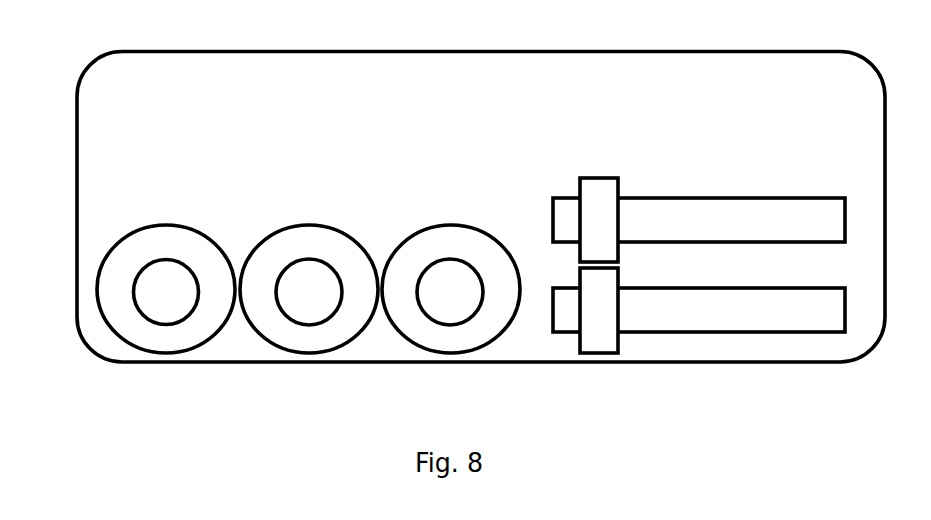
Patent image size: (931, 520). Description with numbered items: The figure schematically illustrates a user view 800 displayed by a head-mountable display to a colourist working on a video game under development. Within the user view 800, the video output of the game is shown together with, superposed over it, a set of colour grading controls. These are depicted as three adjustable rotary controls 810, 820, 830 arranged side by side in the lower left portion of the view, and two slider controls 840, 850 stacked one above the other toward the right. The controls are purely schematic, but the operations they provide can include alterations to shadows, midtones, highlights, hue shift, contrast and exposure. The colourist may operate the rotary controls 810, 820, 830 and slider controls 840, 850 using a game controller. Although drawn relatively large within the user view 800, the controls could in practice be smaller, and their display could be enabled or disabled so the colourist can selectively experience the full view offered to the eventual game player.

The user view 800 is at (170, 50).
The adjustable rotary control 810 is at (213, 338).
The adjustable rotary control 820 is at (350, 340).
The adjustable rotary control 830 is at (480, 345).
The slider control 840 is at (577, 225).
The slider control 850 is at (580, 307).